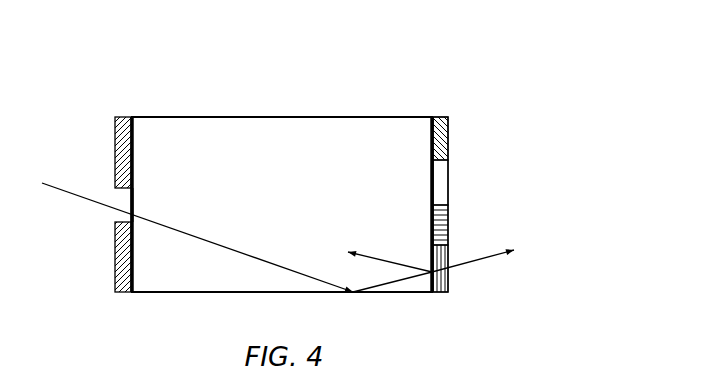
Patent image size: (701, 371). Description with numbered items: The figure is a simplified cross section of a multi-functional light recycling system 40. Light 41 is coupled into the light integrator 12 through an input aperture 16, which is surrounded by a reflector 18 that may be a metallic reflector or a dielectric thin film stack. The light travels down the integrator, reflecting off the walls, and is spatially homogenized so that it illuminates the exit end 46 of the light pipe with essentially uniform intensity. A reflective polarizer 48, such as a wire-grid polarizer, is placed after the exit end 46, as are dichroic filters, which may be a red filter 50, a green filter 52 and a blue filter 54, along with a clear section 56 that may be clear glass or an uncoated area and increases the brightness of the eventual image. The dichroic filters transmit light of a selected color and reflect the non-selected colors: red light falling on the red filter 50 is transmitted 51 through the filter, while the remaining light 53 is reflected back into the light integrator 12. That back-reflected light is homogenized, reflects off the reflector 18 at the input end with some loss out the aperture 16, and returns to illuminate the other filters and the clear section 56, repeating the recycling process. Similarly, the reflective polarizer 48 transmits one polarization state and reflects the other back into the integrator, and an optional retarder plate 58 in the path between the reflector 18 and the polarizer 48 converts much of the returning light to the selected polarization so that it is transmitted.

The light integrator 12 is at (225, 116).
The input aperture 16 is at (92, 213).
The reflector 18 is at (123, 117).
The multi-functional light recycling system 40 is at (359, 81).
The light 41 is at (53, 180).
The exit end 46 is at (420, 123).
The reflective polarizer 48 is at (430, 296).
The red filter 50 is at (437, 294).
The transmitted light 51 is at (493, 258).
The green filter 52 is at (448, 225).
The reflected light 53 is at (370, 257).
The blue filter 54 is at (448, 138).
The clear section 56 is at (448, 182).
The retarder plate 58 is at (133, 117).